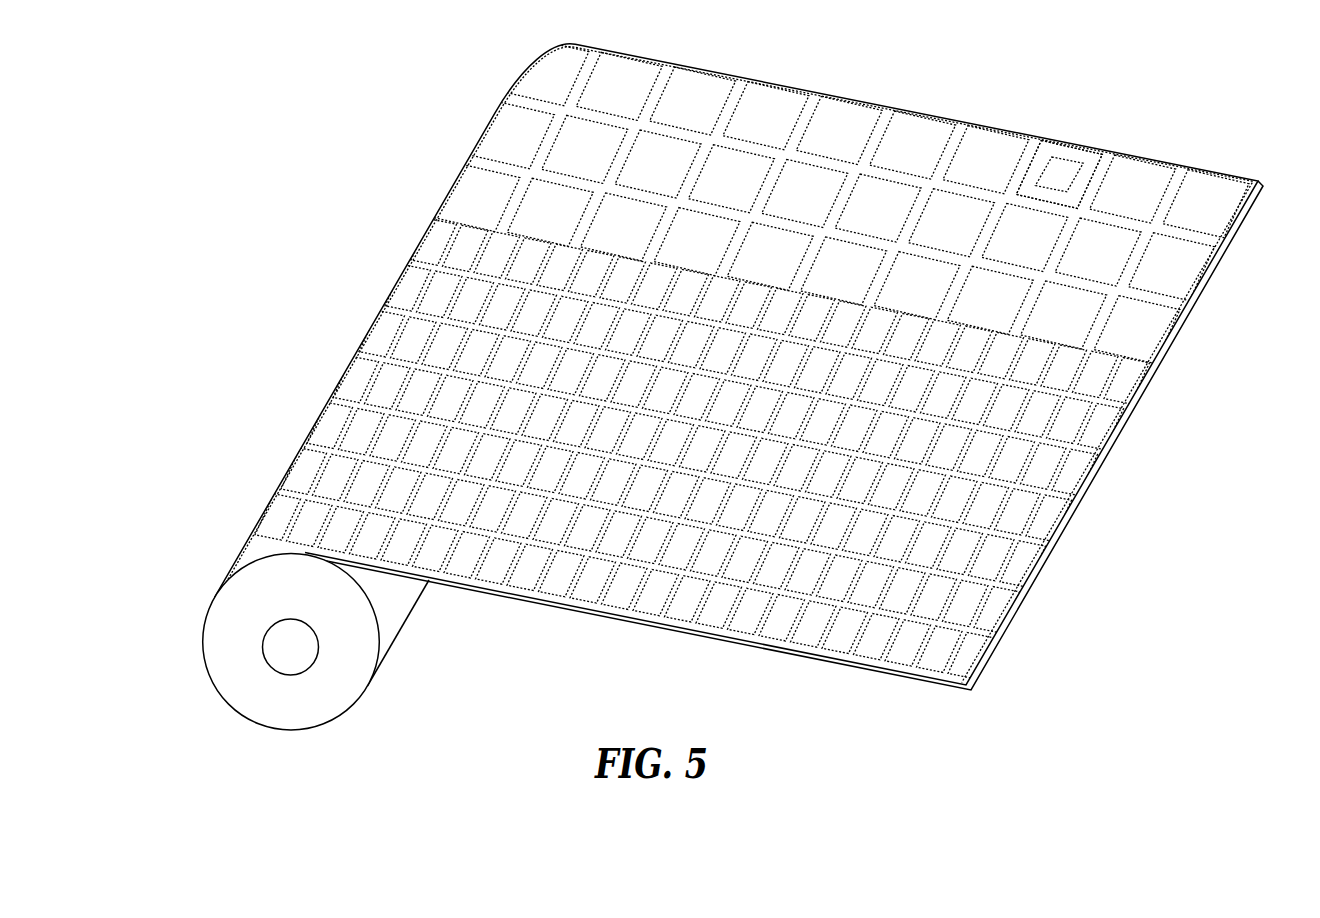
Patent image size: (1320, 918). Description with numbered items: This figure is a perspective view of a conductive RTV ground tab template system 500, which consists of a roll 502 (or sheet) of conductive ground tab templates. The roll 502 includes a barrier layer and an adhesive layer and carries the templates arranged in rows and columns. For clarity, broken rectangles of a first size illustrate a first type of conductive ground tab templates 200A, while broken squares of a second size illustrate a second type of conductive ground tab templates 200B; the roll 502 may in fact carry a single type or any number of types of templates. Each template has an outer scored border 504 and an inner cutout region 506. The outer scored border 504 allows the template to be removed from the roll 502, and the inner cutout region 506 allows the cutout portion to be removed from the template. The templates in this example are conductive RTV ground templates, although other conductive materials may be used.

The conductive RTV ground tab template system 500 is at (283, 79).
The roll 502 is at (218, 624).
The outer scored border 504 is at (1036, 153).
The inner cutout region 506 is at (1070, 159).
The first type of conductive ground tab templates 200A is at (720, 465).
The second type of conductive ground tab templates 200B is at (865, 207).